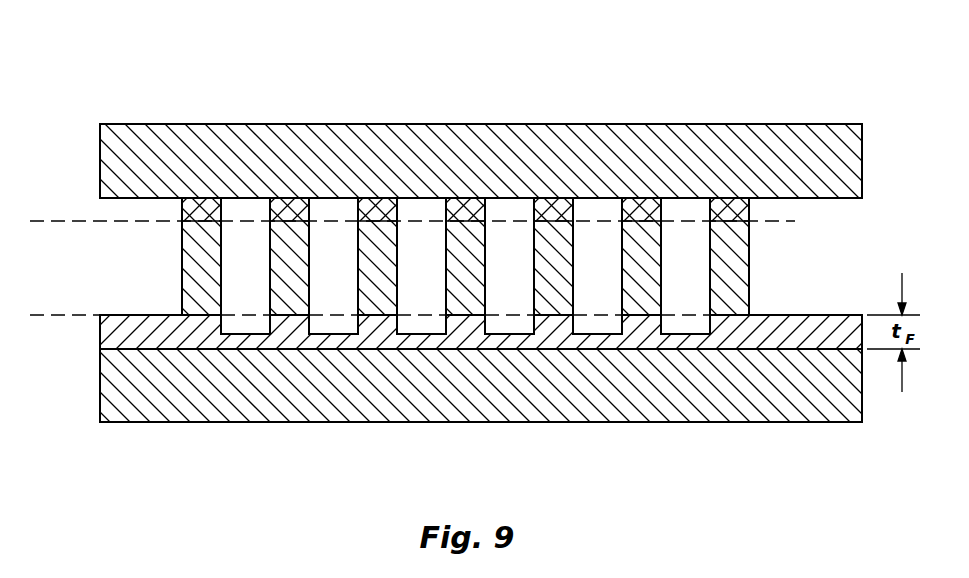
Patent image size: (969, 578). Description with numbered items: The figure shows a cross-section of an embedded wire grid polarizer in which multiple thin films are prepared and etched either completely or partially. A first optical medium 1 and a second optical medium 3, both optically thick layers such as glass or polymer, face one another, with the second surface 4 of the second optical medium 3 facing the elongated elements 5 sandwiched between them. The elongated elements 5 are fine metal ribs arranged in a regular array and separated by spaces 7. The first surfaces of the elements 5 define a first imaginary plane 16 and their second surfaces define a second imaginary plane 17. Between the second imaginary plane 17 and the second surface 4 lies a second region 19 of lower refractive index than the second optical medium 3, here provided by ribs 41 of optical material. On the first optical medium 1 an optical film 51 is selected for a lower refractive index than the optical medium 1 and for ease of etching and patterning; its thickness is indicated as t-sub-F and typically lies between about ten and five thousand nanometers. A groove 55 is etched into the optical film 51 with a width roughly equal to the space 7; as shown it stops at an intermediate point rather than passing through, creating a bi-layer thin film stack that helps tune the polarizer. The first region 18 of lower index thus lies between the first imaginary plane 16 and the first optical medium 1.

The first optical medium 1 is at (785, 410).
The second optical medium 3 is at (600, 135).
The second surface 4 is at (122, 199).
The elongated elements 5 is at (641, 230).
The spaces 7 is at (505, 277).
The first imaginary plane 16 is at (33, 316).
The second imaginary plane 17 is at (50, 221).
The first region 18 is at (107, 333).
The second region 19 is at (245, 214).
The ribs of optical material 41 is at (370, 210).
The optical film 51 is at (180, 337).
The groove 55 is at (413, 322).